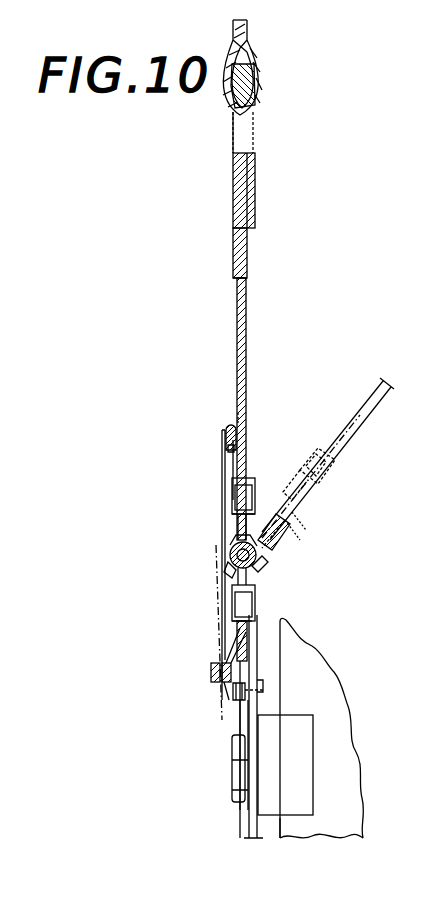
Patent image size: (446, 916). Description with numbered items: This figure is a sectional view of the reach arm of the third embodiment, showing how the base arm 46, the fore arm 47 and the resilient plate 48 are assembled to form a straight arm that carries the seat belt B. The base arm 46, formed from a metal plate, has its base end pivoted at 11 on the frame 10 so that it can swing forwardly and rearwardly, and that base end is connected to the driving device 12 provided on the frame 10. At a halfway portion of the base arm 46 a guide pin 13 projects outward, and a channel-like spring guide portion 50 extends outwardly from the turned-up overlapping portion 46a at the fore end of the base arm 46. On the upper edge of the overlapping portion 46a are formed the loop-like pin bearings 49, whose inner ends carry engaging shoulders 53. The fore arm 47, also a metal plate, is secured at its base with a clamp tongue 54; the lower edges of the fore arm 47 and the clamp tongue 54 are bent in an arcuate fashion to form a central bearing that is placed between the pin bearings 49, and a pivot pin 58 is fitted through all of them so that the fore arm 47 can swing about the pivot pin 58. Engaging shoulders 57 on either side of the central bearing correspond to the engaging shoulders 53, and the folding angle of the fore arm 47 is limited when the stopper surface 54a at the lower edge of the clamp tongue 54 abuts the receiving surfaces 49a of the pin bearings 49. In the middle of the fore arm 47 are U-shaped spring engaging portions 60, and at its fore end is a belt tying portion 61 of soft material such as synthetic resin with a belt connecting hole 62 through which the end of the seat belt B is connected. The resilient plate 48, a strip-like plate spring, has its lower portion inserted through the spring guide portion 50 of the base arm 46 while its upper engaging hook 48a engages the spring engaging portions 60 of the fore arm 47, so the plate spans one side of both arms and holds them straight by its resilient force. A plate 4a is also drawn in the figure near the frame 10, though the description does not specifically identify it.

The seat belt B is at (246, 43).
The belt connecting hole 62 is at (240, 160).
The belt tying portion 61 is at (247, 201).
The fore arm 47 is at (353, 432).
The engaging hook 48a is at (235, 428).
The spring engaging portion 60 is at (226, 437).
The resilient plate 48 is at (283, 480).
The pin bearing 49 is at (232, 548).
The engaging shoulder 53 is at (237, 556).
The engaging shoulder 57 is at (228, 570).
The turned-up overlapping portion 46a is at (222, 585).
The clamp tongue 54 is at (266, 540).
The pivot pin 58 is at (256, 555).
The stopper surface 54a is at (254, 568).
The receiving surface 49a is at (252, 586).
The base arm 46 is at (247, 639).
The plate 4a is at (283, 658).
The guide pin 13 is at (262, 693).
The frame 10 is at (256, 706).
The spring guide portion 50 is at (211, 676).
The pivot 11 is at (240, 772).
The driving device 12 is at (305, 772).